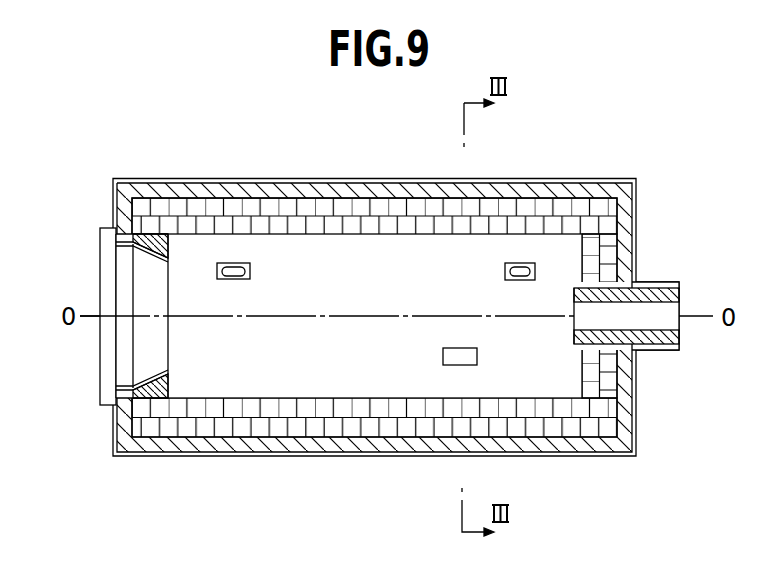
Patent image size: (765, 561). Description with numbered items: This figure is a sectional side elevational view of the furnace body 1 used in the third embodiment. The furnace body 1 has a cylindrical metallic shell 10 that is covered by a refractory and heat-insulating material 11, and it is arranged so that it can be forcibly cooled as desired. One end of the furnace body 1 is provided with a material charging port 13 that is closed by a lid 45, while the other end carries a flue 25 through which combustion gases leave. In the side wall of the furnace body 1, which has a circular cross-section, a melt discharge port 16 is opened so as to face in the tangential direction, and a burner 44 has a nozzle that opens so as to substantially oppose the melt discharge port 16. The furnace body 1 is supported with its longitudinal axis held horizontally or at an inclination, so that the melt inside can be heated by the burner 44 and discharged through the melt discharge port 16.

The furnace body 1 is at (337, 180).
The cylindrical metallic shell 10 is at (415, 178).
The refractory and heat-insulating material 11 is at (166, 225).
The material charging port 13 is at (127, 262).
The melt discharge port 16 is at (448, 353).
The flue 25 is at (657, 313).
The burner 44 is at (234, 266).
The lid 45 is at (108, 361).